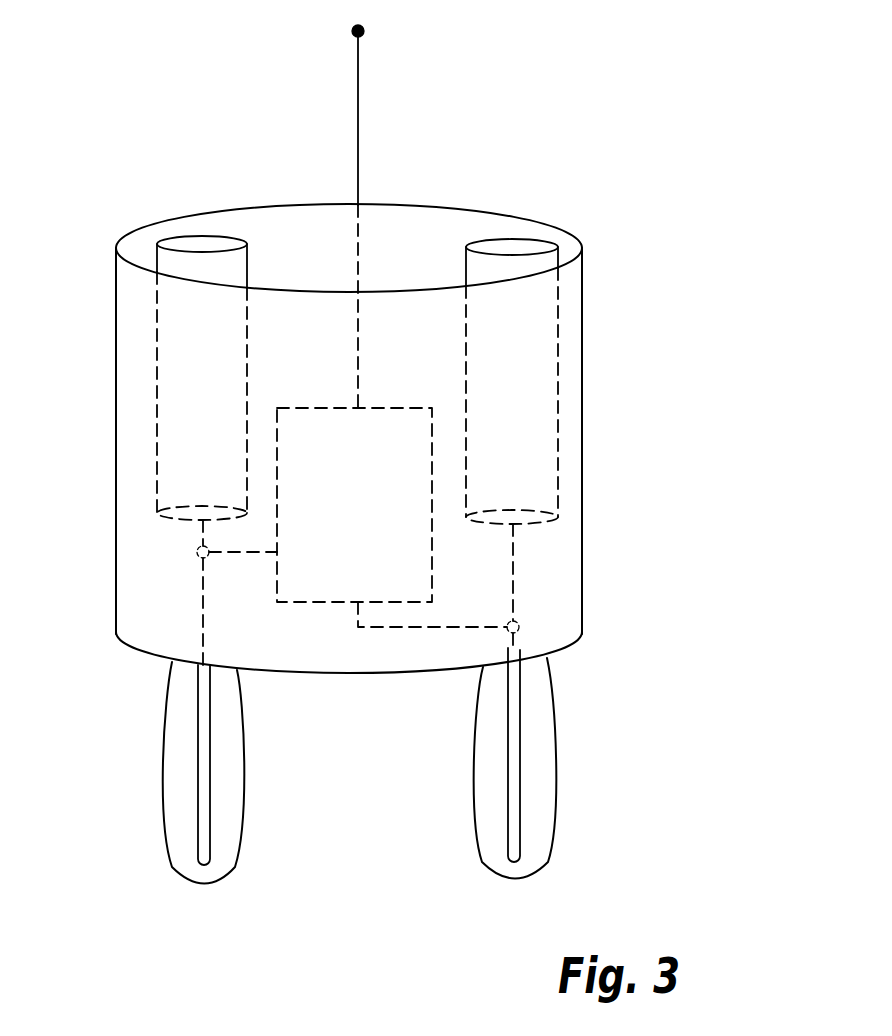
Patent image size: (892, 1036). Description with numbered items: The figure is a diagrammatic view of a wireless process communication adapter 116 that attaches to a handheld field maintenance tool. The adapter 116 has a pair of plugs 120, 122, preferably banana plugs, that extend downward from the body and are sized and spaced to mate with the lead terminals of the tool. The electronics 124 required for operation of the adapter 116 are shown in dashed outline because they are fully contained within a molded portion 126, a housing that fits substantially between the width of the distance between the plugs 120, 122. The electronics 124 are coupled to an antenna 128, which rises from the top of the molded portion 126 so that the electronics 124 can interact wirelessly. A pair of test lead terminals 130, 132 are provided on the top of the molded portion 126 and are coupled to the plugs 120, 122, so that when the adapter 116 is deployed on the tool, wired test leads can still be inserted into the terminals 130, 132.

The wireless process communication adapter 116 is at (476, 115).
The plug 120 is at (168, 740).
The plug 122 is at (548, 767).
The electronics 124 is at (327, 607).
The molded portion 126 is at (413, 206).
The antenna 128 is at (358, 137).
The test lead terminal 130 is at (190, 238).
The test lead terminal 132 is at (526, 243).